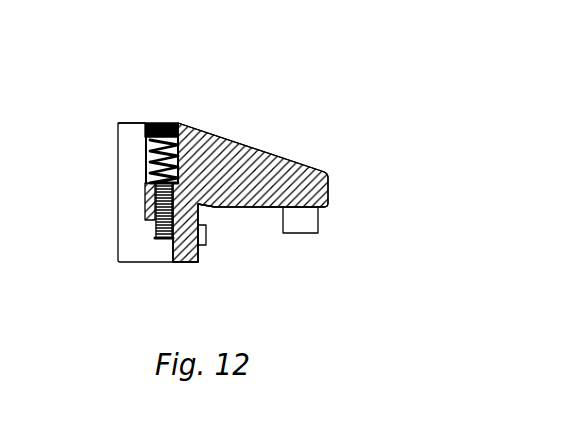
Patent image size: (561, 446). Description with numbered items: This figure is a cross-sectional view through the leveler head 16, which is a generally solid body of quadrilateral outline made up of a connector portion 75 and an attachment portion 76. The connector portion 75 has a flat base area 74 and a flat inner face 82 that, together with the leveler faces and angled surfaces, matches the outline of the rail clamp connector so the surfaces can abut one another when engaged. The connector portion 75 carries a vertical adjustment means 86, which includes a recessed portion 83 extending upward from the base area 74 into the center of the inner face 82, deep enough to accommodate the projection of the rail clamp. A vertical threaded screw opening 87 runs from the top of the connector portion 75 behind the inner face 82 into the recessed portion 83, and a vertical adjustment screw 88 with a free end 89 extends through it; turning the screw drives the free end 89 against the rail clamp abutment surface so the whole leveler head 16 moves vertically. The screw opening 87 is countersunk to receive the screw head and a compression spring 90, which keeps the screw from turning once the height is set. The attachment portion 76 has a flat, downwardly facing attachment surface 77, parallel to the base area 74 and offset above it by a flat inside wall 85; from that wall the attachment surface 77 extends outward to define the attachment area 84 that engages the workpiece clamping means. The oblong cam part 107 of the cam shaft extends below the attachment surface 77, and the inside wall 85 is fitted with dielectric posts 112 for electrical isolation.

The leveler head 16 is at (122, 92).
The base area 74 is at (152, 265).
The connector portion 75 is at (99, 190).
The attachment portion 76 is at (297, 150).
The attachment surface 77 is at (280, 249).
The inner face 82 is at (145, 172).
The recessed portion 83 is at (165, 247).
The attachment area 84 is at (263, 207).
The inside wall 85 is at (198, 252).
The vertical adjustment means 86 is at (167, 118).
The threaded screw opening 87 is at (199, 205).
The vertical adjustment screw 88 is at (150, 218).
The free end 89 is at (161, 238).
The compression spring 90 is at (150, 152).
The cam part 107 is at (310, 220).
The dielectric posts 112 is at (206, 232).